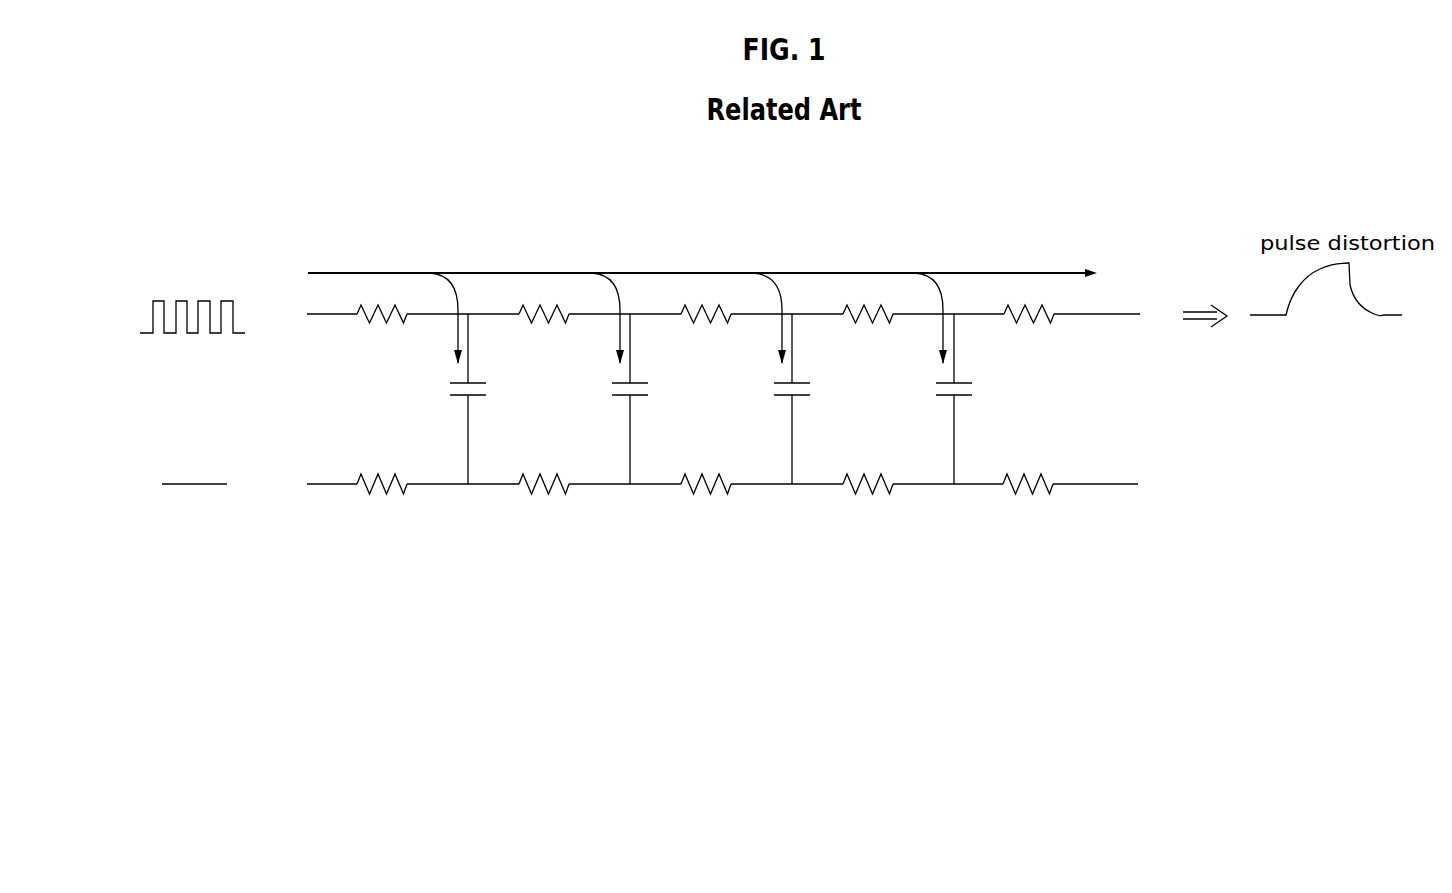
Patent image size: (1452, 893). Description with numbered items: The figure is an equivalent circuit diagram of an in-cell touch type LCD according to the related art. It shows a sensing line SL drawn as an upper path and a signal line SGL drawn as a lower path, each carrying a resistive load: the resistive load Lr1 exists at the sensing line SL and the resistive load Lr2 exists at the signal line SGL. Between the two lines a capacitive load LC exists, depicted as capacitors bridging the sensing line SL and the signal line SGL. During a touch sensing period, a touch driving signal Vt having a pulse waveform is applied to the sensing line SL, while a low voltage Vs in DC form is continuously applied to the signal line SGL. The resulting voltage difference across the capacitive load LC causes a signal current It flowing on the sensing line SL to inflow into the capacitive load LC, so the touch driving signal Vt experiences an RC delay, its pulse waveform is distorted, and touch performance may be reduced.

The touch driving signal Vt is at (634, 314).
The low voltage Vs is at (634, 484).
The signal current It is at (702, 305).
The sensing line SL is at (1187, 316).
The signal line SGL is at (1167, 483).
The resistive load Lr1 is at (1072, 329).
The resistive load Lr2 is at (1070, 501).
The capacitive load LC is at (973, 399).